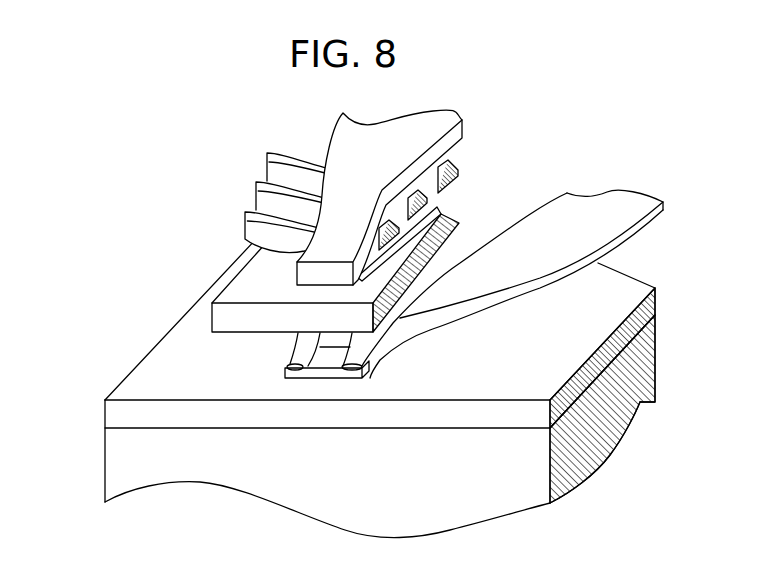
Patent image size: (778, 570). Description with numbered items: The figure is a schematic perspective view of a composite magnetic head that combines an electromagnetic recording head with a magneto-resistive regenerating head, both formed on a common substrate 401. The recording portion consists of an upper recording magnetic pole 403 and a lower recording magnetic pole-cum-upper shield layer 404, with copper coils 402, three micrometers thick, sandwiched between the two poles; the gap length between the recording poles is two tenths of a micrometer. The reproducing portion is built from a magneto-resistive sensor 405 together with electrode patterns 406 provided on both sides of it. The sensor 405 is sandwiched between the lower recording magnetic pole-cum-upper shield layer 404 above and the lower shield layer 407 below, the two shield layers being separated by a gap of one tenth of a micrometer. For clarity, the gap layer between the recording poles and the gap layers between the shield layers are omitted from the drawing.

The substrate 401 is at (110, 460).
The coils 402 is at (268, 161).
The upper recording magnetic pole 403 is at (302, 275).
The lower recording magnetic pole-cum-upper shield layer 404 is at (213, 320).
The magneto-resistive sensor 405 is at (323, 372).
The electrode patterns 406 is at (298, 354).
The lower shield layer 407 is at (108, 415).